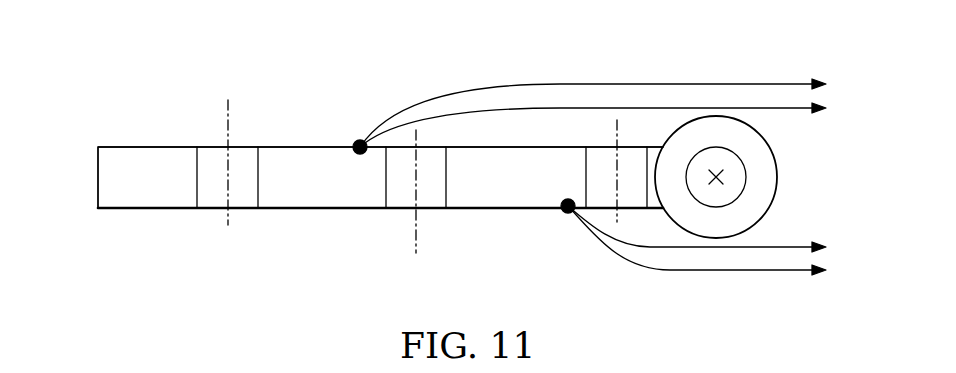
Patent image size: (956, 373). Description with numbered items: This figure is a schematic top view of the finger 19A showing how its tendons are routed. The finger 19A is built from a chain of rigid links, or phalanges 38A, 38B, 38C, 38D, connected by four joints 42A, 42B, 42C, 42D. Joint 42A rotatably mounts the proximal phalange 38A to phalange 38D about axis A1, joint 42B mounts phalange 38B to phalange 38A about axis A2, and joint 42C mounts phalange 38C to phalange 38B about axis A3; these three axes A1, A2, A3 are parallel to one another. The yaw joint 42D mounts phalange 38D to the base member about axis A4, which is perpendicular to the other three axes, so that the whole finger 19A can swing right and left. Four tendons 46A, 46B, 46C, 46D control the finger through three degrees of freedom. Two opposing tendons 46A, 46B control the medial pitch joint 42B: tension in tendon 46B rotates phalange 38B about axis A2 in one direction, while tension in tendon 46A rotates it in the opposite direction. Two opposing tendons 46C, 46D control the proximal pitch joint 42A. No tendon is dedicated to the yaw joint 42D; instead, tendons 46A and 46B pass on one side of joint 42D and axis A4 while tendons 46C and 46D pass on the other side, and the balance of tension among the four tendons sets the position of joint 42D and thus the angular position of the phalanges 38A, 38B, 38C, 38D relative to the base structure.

The finger 19A is at (108, 120).
The proximal phalange 38A is at (510, 210).
The phalange 38B is at (314, 147).
The phalange 38C is at (150, 147).
The phalange 38D is at (655, 147).
The proximal pitch joint 42A is at (600, 177).
The medial pitch joint 42B is at (380, 193).
The joint 42C is at (213, 179).
The yaw joint 42D is at (722, 158).
The tendon 46A is at (745, 84).
The tendon 46B is at (772, 108).
The tendon 46C is at (773, 250).
The tendon 46D is at (697, 275).
The axis A1 is at (617, 124).
The axis A2 is at (416, 232).
The axis A3 is at (228, 117).
The axis A4 is at (726, 183).